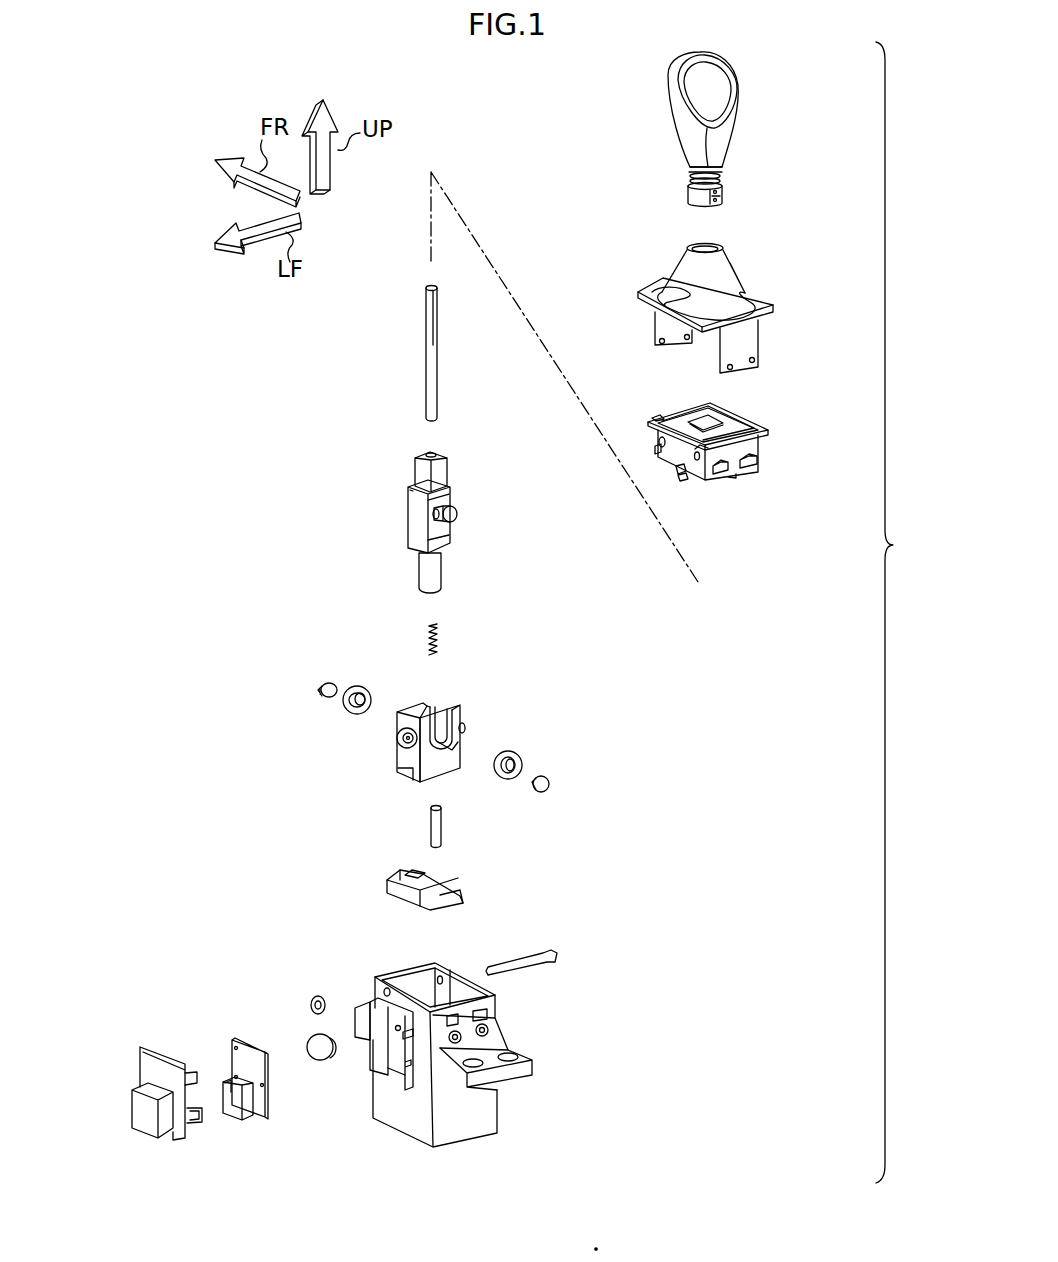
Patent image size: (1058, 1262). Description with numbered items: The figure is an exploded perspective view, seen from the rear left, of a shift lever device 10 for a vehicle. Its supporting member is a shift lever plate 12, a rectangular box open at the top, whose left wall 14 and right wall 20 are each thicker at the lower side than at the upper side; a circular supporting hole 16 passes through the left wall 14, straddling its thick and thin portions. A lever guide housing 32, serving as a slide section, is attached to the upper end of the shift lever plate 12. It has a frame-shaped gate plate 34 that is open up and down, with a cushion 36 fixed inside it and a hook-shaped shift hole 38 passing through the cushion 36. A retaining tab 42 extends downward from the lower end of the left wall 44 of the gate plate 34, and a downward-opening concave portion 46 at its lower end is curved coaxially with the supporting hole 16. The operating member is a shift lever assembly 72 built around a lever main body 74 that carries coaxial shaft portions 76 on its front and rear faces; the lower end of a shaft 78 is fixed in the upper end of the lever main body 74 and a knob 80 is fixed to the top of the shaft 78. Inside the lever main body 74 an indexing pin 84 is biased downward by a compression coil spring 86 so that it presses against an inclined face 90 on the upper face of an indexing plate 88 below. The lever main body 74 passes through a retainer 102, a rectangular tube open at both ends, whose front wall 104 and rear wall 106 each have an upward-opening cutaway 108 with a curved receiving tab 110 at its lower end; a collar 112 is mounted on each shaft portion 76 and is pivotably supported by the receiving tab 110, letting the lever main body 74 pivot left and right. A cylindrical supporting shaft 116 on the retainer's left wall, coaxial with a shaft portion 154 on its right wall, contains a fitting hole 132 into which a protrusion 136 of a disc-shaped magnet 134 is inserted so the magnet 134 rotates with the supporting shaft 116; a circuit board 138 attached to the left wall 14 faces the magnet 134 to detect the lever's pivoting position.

The shift lever device 10 is at (452, 152).
The shift lever plate 12 is at (344, 1054).
The left wall 14 is at (400, 1118).
The supporting hole 16 is at (400, 1037).
The right wall 20 is at (463, 985).
The lever guide housing 32 is at (726, 390).
The gate plate 34 is at (764, 450).
The cushion 36 is at (733, 426).
The shift hole 38 is at (700, 408).
The retaining tab 42 is at (677, 470).
The left wall 44 is at (658, 450).
The concave portion 46 is at (682, 481).
The shift lever assembly 72 is at (417, 440).
The lever main body 74 is at (410, 520).
The shaft portions 76 is at (458, 515).
The shaft 78 is at (437, 375).
The knob 80 is at (680, 140).
The indexing pin 84 is at (442, 832).
The compression coil spring 86 is at (438, 628).
The indexing plate 88 is at (401, 874).
The inclined face 90 is at (411, 873).
The retainer 102 is at (446, 727).
The front wall 104 is at (404, 776).
The rear wall 106 is at (447, 778).
The cutaway 108 is at (420, 718).
The receiving tab 110 is at (460, 748).
The collar 112 is at (352, 690).
The supporting shaft 116 is at (402, 735).
The fitting hole 132 is at (398, 756).
The magnet 134 is at (313, 1052).
The protrusion 136 is at (336, 1050).
The circuit board 138 is at (255, 1045).
The shaft portion 154 is at (450, 720).